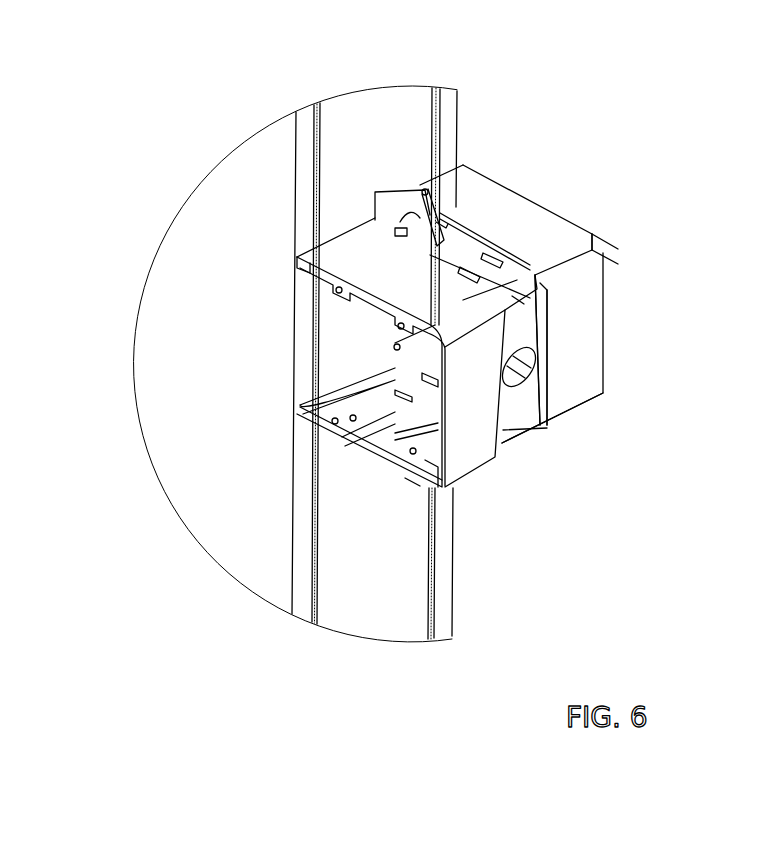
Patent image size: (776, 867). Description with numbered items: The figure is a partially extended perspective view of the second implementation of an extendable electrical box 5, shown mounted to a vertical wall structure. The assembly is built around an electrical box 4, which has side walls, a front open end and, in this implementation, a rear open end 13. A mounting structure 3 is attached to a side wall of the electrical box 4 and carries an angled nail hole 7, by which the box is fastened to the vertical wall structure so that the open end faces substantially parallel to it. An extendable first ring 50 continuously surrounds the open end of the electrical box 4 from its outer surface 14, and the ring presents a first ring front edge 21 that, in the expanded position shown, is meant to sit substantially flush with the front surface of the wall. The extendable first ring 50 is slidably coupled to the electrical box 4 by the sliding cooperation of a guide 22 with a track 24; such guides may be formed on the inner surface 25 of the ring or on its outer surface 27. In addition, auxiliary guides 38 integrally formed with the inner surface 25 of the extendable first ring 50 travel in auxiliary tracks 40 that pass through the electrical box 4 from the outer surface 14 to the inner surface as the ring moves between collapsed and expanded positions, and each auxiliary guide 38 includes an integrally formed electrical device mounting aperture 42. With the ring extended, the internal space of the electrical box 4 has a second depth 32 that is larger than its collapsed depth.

The mounting structure 3 is at (395, 207).
The electrical box 4 is at (527, 403).
The extendable electrical box 5 is at (648, 150).
The angled nail hole 7 is at (424, 190).
The rear open end 13 is at (600, 222).
The outer surface 14 is at (528, 340).
The first ring front edge 21 is at (405, 455).
The guide 22 is at (548, 284).
The track 24 is at (524, 297).
The inner surface 25 is at (413, 479).
The outer surface 27 is at (475, 455).
The second depth 32 is at (460, 530).
The auxiliary guide 38 is at (399, 326).
The auxiliary track 40 is at (402, 232).
The electrical device mounting aperture 42 is at (337, 290).
The extendable first ring 50 is at (347, 253).